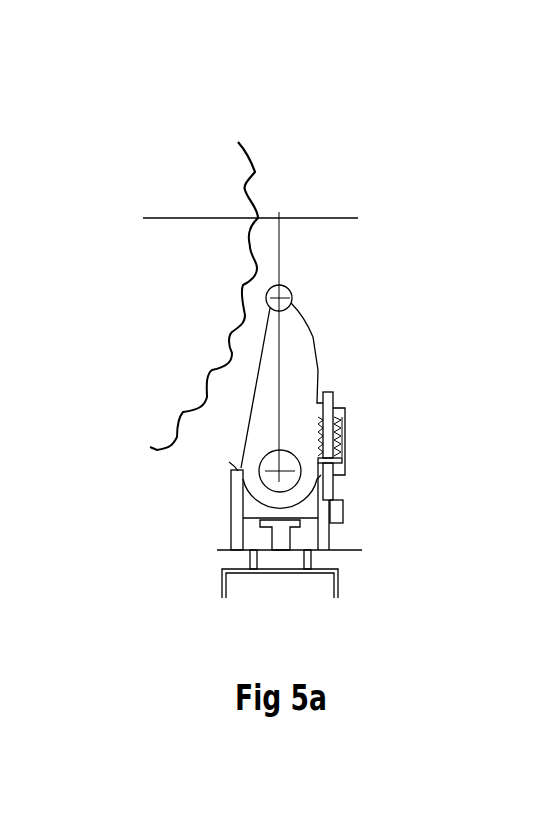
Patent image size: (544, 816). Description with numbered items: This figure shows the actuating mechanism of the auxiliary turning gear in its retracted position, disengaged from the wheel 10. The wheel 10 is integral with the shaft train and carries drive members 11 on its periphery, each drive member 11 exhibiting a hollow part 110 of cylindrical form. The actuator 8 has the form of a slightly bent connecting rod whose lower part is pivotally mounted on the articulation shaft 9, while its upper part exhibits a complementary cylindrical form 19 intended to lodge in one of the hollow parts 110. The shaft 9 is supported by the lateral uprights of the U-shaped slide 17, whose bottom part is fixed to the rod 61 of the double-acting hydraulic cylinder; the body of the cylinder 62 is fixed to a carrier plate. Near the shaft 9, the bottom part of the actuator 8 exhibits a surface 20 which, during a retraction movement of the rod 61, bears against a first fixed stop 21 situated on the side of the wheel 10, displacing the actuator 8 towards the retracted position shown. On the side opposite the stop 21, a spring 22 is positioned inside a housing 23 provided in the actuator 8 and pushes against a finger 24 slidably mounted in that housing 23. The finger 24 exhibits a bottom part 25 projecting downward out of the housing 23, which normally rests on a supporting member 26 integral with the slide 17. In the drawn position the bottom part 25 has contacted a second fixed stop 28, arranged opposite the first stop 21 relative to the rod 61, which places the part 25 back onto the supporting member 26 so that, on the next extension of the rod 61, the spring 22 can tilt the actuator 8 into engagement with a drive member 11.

The actuator 8 is at (303, 337).
The articulation 9 is at (268, 462).
The wheel 10 is at (250, 246).
The drive member 11 is at (267, 213).
The hollow part 110 is at (252, 286).
The slide 17 is at (253, 537).
The cylindrical form 19 is at (285, 297).
The surface 20 is at (229, 462).
The first fixed stop 21 is at (237, 503).
The spring 22 is at (340, 427).
The housing 23 is at (340, 468).
The finger 24 is at (333, 397).
The bottom part 25 is at (330, 487).
The supporting member 26 is at (337, 512).
The second fixed stop 28 is at (323, 532).
The rod 61 is at (267, 560).
The body of the cylinder 62 is at (280, 584).